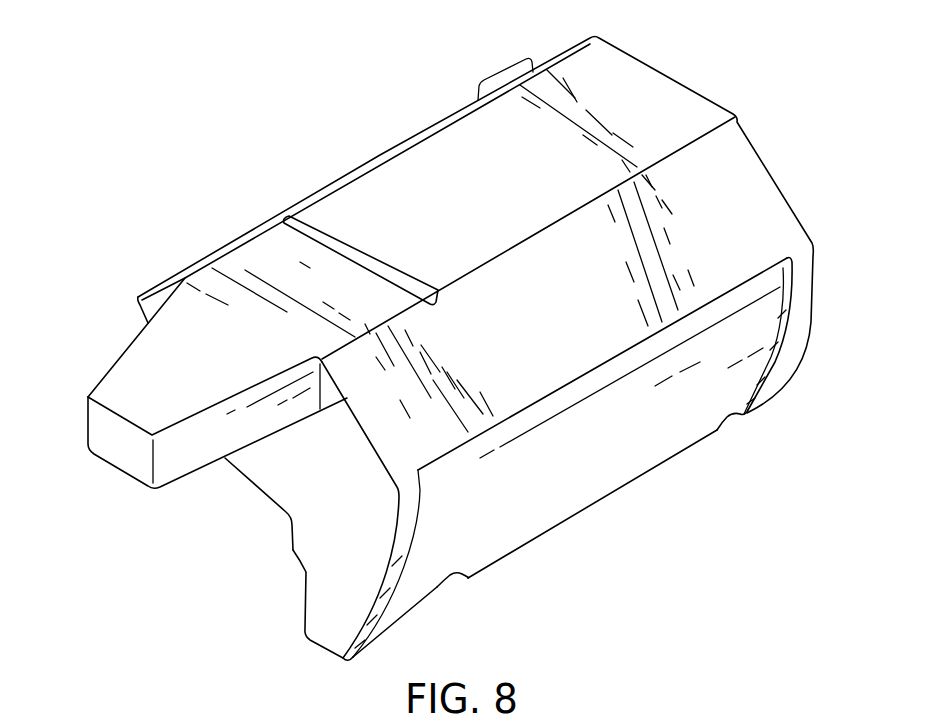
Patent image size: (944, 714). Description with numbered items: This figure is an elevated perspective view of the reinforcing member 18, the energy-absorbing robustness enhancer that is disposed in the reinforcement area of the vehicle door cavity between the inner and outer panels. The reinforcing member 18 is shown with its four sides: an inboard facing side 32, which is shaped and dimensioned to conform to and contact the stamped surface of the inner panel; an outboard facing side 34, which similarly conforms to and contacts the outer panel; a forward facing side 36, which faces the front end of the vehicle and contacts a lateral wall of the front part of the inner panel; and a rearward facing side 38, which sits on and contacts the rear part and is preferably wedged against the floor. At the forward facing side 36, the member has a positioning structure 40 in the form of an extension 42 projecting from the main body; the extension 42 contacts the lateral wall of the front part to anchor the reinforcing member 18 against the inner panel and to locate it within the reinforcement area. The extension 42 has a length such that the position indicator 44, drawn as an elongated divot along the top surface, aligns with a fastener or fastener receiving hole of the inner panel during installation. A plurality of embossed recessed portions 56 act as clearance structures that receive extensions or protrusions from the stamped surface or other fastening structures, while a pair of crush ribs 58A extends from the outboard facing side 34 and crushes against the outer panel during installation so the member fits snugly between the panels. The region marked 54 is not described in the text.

The reinforcing member 18 is at (677, 35).
The inboard facing side 32 is at (255, 493).
The outboard facing side 34 is at (561, 402).
The forward facing side 36 is at (342, 568).
The rearward facing side 38 is at (765, 163).
The positioning structure 40 is at (116, 352).
The extension 42 is at (185, 453).
The position indicator 44 is at (390, 263).
The lower edge span 54 is at (757, 478).
The embossed recessed portions 56 is at (445, 588).
The crush ribs 58A is at (397, 587).